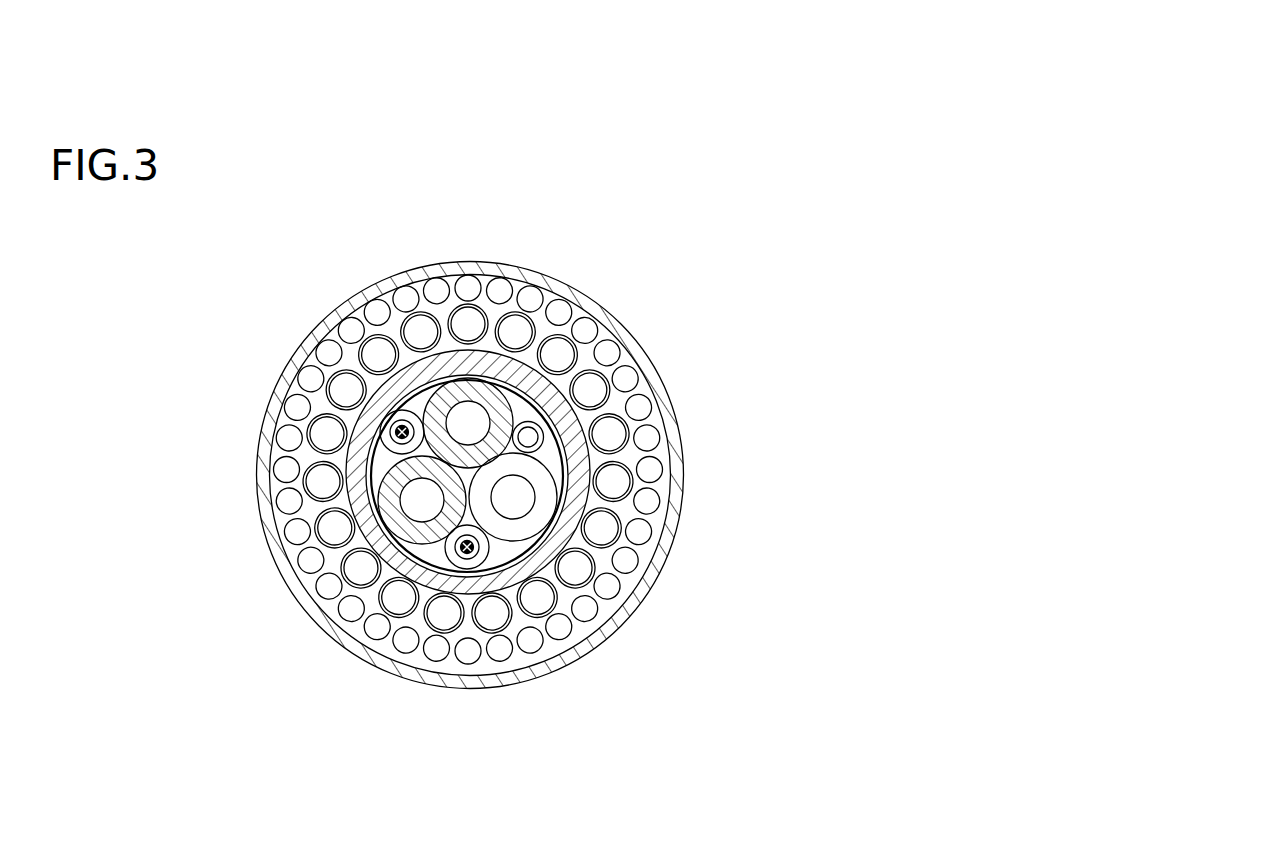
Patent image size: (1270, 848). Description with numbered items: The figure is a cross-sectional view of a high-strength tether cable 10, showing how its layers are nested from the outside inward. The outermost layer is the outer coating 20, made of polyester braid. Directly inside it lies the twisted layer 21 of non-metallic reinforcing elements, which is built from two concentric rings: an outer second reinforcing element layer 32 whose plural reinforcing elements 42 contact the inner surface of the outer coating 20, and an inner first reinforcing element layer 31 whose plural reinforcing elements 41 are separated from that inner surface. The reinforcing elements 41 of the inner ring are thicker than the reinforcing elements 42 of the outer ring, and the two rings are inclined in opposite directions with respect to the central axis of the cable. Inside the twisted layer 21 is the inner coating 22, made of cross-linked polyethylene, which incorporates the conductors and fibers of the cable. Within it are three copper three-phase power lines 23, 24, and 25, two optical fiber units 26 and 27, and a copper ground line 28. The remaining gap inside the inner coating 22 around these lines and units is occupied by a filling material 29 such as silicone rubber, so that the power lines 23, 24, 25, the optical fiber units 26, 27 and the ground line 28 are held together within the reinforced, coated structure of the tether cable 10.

The tether cable 10 is at (502, 702).
The outer coating 20 is at (598, 641).
The twisted layer 21 is at (757, 337).
The inner coating 22 is at (543, 434).
The three-phase power line 23 is at (545, 499).
The three-phase power line 24 is at (402, 524).
The three-phase power line 25 is at (466, 424).
The optical fiber unit 26 is at (485, 550).
The optical fiber unit 27 is at (397, 440).
The ground line 28 is at (539, 459).
The filling material 29 is at (550, 468).
The first reinforcing element layer 31 is at (559, 323).
The second reinforcing element layer 32 is at (546, 399).
The reinforcing element 41 is at (381, 352).
The reinforcing element 42 is at (503, 292).